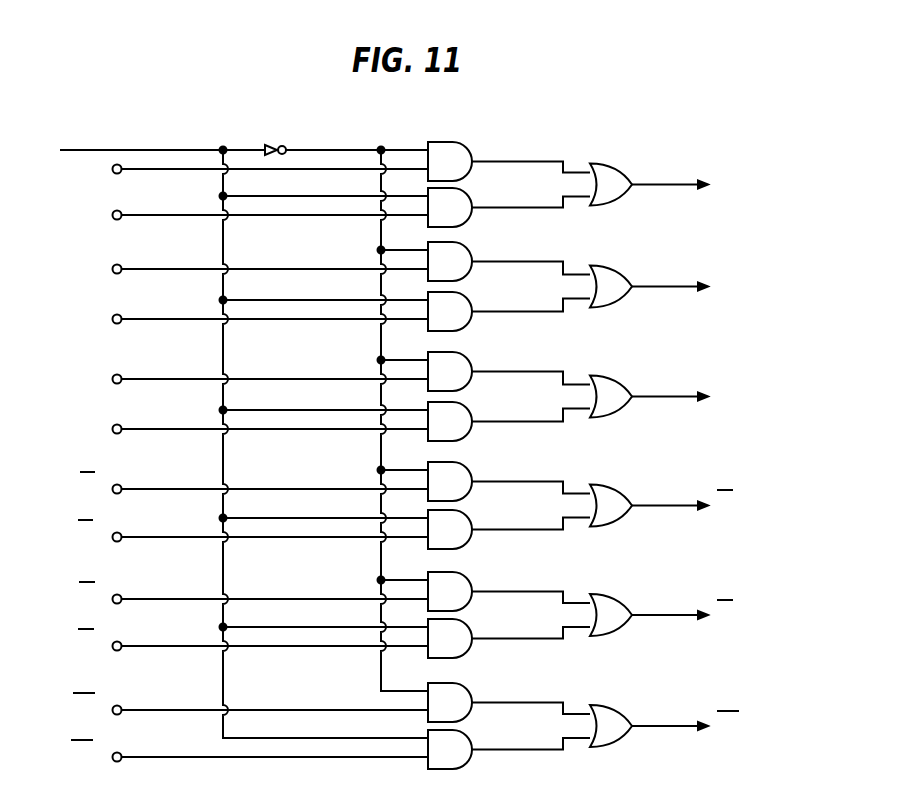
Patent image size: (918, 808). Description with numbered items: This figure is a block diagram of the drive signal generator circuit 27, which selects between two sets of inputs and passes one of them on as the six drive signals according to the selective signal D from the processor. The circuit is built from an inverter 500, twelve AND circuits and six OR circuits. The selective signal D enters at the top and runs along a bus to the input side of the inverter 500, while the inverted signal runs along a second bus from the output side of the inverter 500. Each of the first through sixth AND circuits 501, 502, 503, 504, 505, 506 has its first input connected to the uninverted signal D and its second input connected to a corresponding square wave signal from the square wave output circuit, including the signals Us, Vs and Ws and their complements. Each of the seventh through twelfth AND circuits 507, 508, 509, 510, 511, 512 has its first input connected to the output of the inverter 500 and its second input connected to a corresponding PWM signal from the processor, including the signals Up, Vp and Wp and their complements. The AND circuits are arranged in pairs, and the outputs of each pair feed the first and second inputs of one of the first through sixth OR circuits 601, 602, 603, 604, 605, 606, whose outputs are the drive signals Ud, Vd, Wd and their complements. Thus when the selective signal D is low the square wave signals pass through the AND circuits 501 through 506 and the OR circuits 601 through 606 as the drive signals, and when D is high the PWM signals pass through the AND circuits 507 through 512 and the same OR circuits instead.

The drive signal generator circuit 27 is at (592, 131).
The inverter 500 is at (287, 145).
The first AND circuit 501 is at (471, 146).
The second AND circuit 502 is at (471, 246).
The third AND circuit 503 is at (471, 356).
The fourth AND circuit 504 is at (471, 466).
The fifth AND circuit 505 is at (471, 576).
The sixth AND circuit 506 is at (471, 687).
The seventh AND circuit 507 is at (471, 192).
The eighth AND circuit 508 is at (471, 296).
The ninth AND circuit 509 is at (471, 406).
The tenth AND circuit 510 is at (471, 514).
The eleventh AND circuit 511 is at (471, 623).
The twelfth AND circuit 512 is at (471, 734).
The first OR circuit 601 is at (622, 165).
The second OR circuit 602 is at (622, 267).
The third OR circuit 603 is at (622, 377).
The fourth OR circuit 604 is at (622, 486).
The fifth OR circuit 605 is at (622, 595).
The sixth OR circuit 606 is at (622, 706).